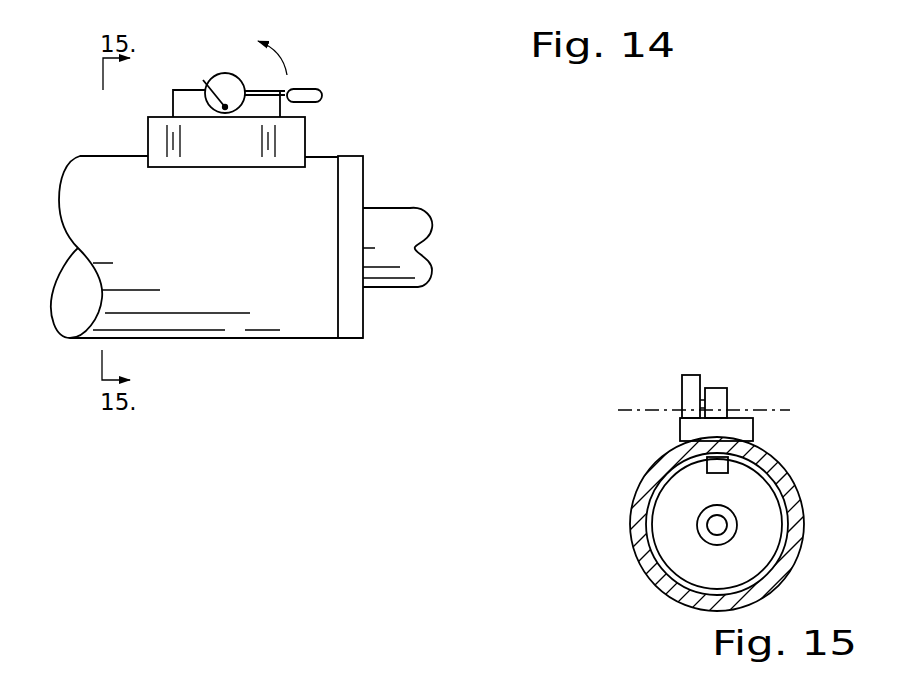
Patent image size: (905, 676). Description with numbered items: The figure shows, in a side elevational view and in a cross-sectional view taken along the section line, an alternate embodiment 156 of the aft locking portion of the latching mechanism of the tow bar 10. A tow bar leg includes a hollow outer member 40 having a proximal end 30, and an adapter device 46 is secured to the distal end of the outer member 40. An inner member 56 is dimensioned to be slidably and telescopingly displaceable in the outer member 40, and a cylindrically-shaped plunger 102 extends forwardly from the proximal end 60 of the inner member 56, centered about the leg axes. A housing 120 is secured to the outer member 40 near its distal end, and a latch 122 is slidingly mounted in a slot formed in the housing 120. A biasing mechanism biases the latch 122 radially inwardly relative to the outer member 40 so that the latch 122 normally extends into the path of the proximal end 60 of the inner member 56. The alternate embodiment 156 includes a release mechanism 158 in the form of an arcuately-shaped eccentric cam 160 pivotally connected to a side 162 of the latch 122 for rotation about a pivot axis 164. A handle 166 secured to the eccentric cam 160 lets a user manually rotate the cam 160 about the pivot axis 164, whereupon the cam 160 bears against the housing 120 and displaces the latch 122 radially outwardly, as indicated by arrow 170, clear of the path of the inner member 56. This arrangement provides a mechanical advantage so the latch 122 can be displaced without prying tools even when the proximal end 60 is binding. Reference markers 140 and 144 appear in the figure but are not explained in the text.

In FIG. 14, the tow bar 10 is at (396, 84).
In FIG. 15, the tow bar 10 is at (774, 371).
In FIG. 15, the proximal end 30 is at (635, 552).
In FIG. 14, the hollow outer member 40 is at (280, 330).
In FIG. 14, the adapter device 46 is at (355, 165).
In FIG. 14, the inner member 56 is at (395, 212).
In FIG. 15, the proximal end 60 is at (752, 557).
In FIG. 15, the plunger 102 is at (730, 520).
In FIG. 14, the housing 120 is at (153, 137).
In FIG. 15, the housing 120 is at (753, 438).
In FIG. 14, the latch 122 is at (182, 103).
In FIG. 15, the latch 122 is at (717, 393).
In FIG. 15, the sensor 140 is at (688, 375).
In FIG. 15, the reference plane 144 is at (777, 410).
In FIG. 14, the alternate embodiment of aft locking portion 156 is at (424, 100).
In FIG. 15, the alternate embodiment of aft locking portion 156 is at (639, 371).
In FIG. 14, the release mechanism 158 is at (424, 137).
In FIG. 15, the release mechanism 158 is at (634, 423).
In FIG. 14, the eccentric cam 160 is at (222, 74).
In FIG. 14, the side 162 is at (268, 110).
In FIG. 15, the side 162 is at (697, 390).
In FIG. 14, the pivot axis 164 is at (203, 80).
In FIG. 14, the handle 166 is at (320, 90).
In FIG. 14, the arrow 170 is at (283, 58).